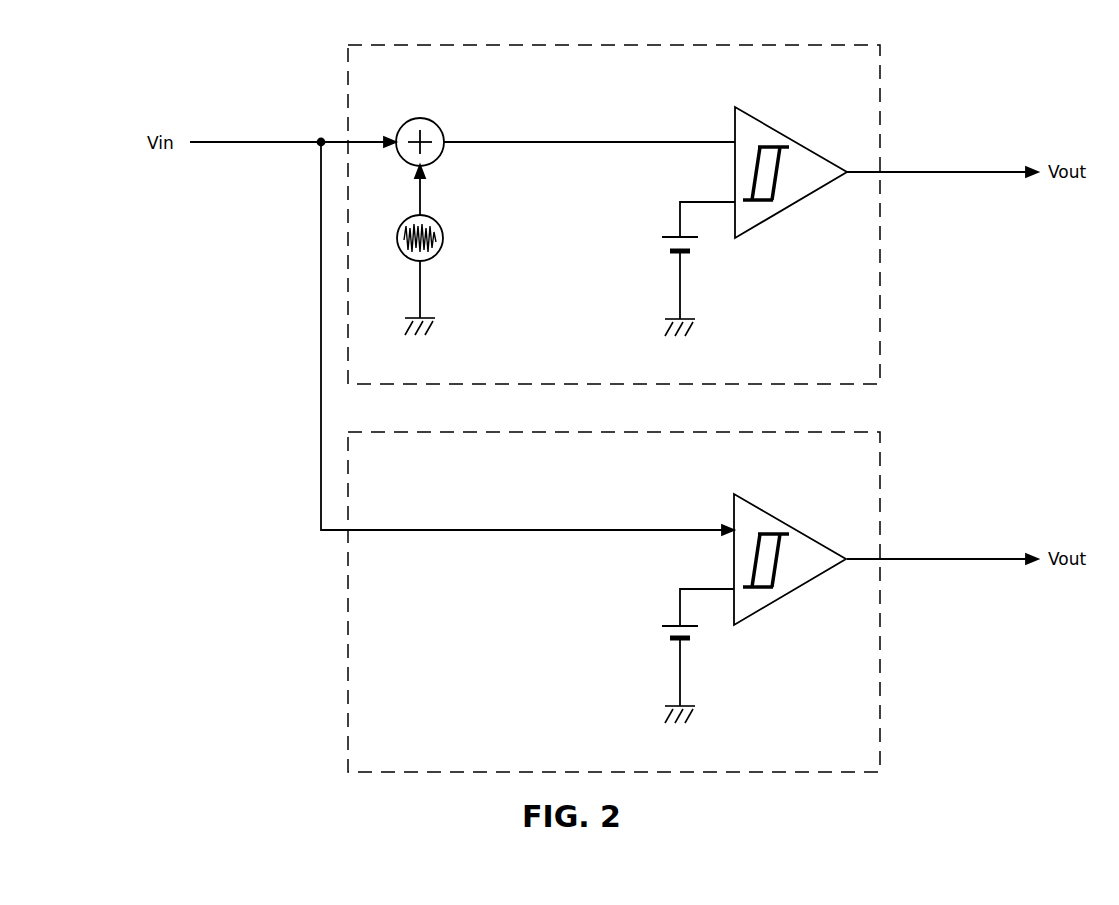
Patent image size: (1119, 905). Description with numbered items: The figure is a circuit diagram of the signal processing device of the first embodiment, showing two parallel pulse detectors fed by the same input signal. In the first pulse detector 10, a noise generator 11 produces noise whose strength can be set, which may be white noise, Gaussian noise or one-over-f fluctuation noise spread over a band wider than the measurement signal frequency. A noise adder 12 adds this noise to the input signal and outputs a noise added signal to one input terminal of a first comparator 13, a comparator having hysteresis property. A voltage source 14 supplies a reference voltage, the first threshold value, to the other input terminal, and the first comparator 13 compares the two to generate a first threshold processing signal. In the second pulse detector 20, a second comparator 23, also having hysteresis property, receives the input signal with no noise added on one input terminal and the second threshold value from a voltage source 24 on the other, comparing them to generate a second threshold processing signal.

The first pulse detector 10 is at (812, 44).
The noise generator 11 is at (437, 214).
The noise adder 12 is at (438, 118).
The first comparator 13 is at (760, 121).
The voltage source 14 is at (694, 245).
The second pulse detector 20 is at (810, 432).
The second comparator 23 is at (762, 510).
The voltage source 24 is at (695, 632).